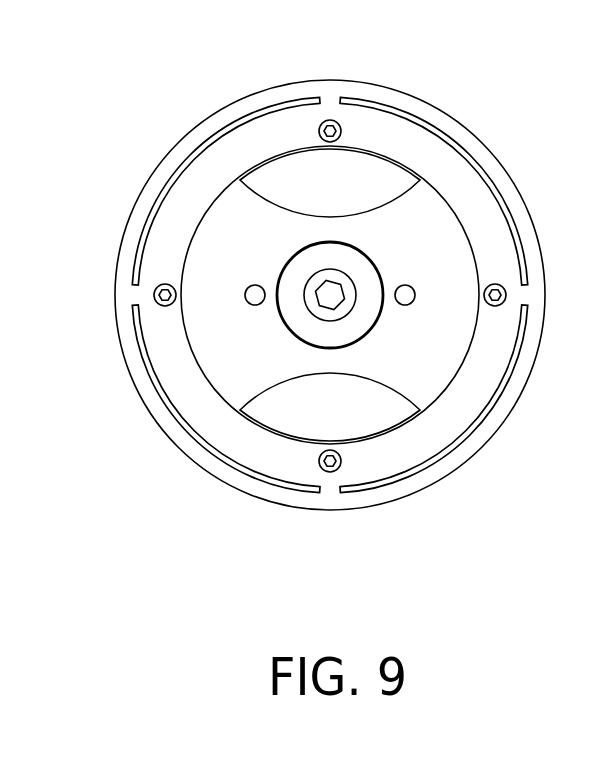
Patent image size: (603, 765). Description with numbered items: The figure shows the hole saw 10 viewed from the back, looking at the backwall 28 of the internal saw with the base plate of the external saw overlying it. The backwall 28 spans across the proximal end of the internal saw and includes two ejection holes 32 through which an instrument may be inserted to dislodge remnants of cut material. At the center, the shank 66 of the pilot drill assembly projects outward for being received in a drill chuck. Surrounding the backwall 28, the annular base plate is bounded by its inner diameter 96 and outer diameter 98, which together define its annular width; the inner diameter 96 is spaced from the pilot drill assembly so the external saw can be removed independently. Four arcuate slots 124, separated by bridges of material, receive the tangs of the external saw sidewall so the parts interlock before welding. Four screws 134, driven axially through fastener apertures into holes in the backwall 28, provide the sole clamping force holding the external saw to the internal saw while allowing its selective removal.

The hole saw 10 is at (137, 460).
The backwall 28 is at (432, 232).
The ejection holes 32 is at (337, 187).
The shank 66 is at (333, 292).
The inner diameter 96 is at (455, 379).
The outer diameter 98 is at (480, 453).
The arcuate slots 124 is at (184, 160).
The screws 134 is at (328, 118).